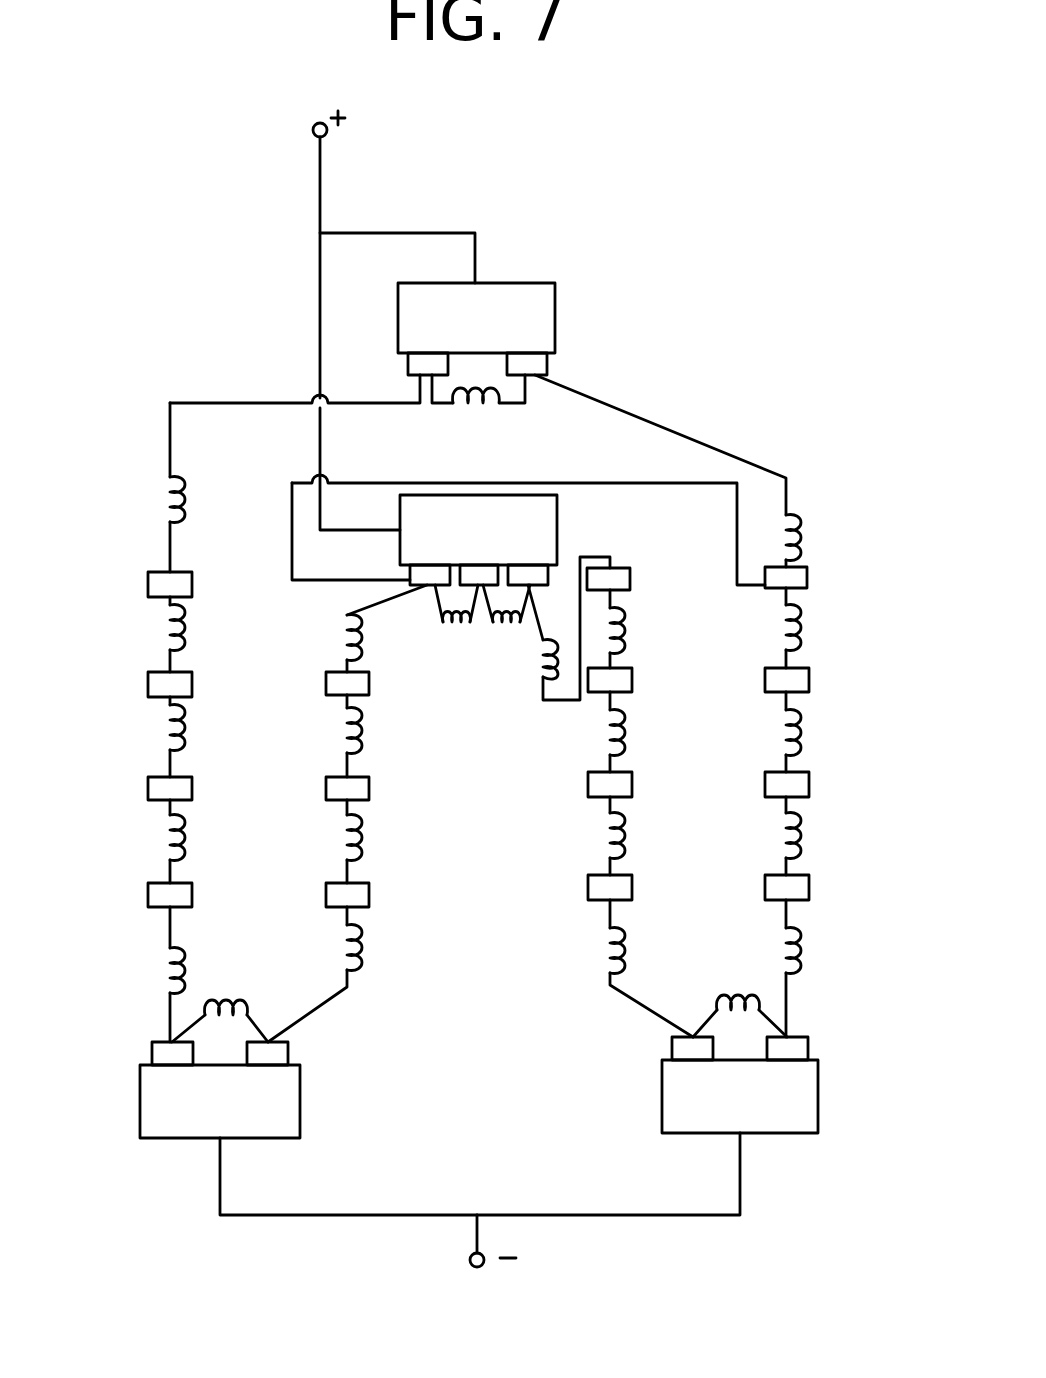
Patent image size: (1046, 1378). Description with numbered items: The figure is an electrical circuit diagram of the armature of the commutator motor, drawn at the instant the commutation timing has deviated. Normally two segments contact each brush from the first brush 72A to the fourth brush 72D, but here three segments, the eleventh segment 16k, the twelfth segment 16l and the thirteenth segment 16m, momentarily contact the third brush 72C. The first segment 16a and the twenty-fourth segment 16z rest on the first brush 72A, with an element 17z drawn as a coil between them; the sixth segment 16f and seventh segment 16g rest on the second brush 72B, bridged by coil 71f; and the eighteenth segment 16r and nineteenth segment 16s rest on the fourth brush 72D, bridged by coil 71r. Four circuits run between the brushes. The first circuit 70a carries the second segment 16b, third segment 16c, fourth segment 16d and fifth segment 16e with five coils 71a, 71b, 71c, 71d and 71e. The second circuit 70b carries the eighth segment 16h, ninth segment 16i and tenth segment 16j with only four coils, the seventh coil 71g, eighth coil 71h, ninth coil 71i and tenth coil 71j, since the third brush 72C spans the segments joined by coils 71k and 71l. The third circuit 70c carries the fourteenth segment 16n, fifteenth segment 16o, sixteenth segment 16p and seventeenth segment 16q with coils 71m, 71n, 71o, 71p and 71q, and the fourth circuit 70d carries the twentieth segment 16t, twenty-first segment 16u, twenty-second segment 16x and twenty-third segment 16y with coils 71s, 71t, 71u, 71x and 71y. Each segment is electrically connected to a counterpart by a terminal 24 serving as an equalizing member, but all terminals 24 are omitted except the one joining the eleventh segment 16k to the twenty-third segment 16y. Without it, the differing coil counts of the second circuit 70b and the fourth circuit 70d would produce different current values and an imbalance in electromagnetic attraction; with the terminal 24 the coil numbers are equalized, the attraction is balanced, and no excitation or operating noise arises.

The terminal 24 is at (655, 480).
The first circuit 70a is at (148, 543).
The second circuit 70b is at (325, 792).
The third circuit 70c is at (590, 748).
The fourth circuit 70d is at (920, 719).
The first brush 72A is at (556, 310).
The second brush 72B is at (140, 1122).
The third brush 72C is at (558, 520).
The fourth brush 72D is at (819, 1118).
The first segment 16a is at (408, 370).
The second segment 16b is at (148, 585).
The third segment 16c is at (148, 685).
The fourth segment 16d is at (148, 789).
The fifth segment 16e is at (148, 895).
The sixth segment 16f is at (152, 1053).
The seventh segment 16g is at (290, 1052).
The eighth segment 16h is at (369, 894).
The ninth segment 16i is at (369, 788).
The tenth segment 16j is at (369, 682).
The eleventh segment 16k is at (409, 578).
The twelfth segment 16l is at (478, 577).
The thirteenth segment 16m is at (545, 577).
The fourteenth segment 16n is at (631, 578).
The fifteenth segment 16o is at (632, 676).
The sixteenth segment 16p is at (632, 780).
The seventeenth segment 16q is at (632, 884).
The eighteenth segment 16r is at (672, 1049).
The nineteenth segment 16s is at (809, 1045).
The twentieth segment 16t is at (809, 888).
The twenty-first segment 16u is at (809, 784).
The twenty-second segment 16x is at (809, 676).
The twenty-third segment 16y is at (808, 578).
The twenty-fourth segment 16z is at (550, 365).
The inductor coil 17z is at (465, 408).
The coil 71a is at (180, 485).
The coil 71b is at (167, 642).
The coil 71c is at (167, 740).
The coil 71d is at (182, 846).
The coil 71e is at (168, 988).
The coil 71f is at (228, 1000).
The seventh coil 71g is at (360, 955).
The eighth coil 71h is at (360, 842).
The ninth coil 71i is at (360, 738).
The tenth coil 71j is at (341, 647).
The coil 71k is at (450, 630).
The coil 71l is at (503, 630).
The coil 71m is at (540, 678).
The coil 71n is at (623, 628).
The coil 71o is at (623, 728).
The coil 71p is at (623, 830).
The coil 71q is at (623, 938).
The coil 71r is at (738, 995).
The coil 71s is at (800, 958).
The coil 71t is at (800, 845).
The coil 71u is at (800, 744).
The coil 71x is at (800, 614).
The coil 71y is at (800, 520).